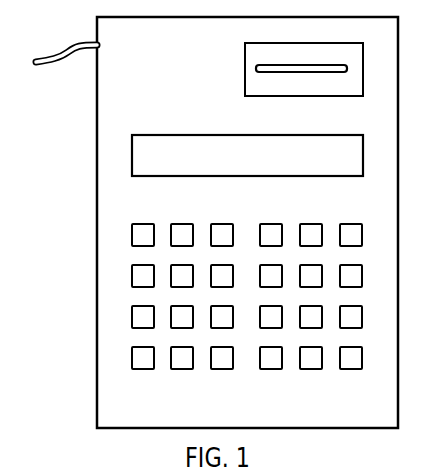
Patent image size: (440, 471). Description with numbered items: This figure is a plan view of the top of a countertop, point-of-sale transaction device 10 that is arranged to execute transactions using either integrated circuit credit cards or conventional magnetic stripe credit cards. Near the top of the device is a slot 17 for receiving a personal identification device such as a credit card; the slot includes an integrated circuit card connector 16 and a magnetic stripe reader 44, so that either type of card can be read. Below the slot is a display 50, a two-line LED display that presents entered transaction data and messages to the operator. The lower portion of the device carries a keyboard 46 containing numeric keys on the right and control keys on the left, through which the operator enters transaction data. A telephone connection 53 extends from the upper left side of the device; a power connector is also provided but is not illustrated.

The transaction device 10 is at (78, 218).
The integrated circuit card connector 16 is at (281, 69).
The magnetic stripe reader 44 is at (252, 75).
The slot 17 is at (347, 68).
The display 50 is at (131, 155).
The keyboard 46 is at (126, 313).
The telephone connection 53 is at (65, 50).